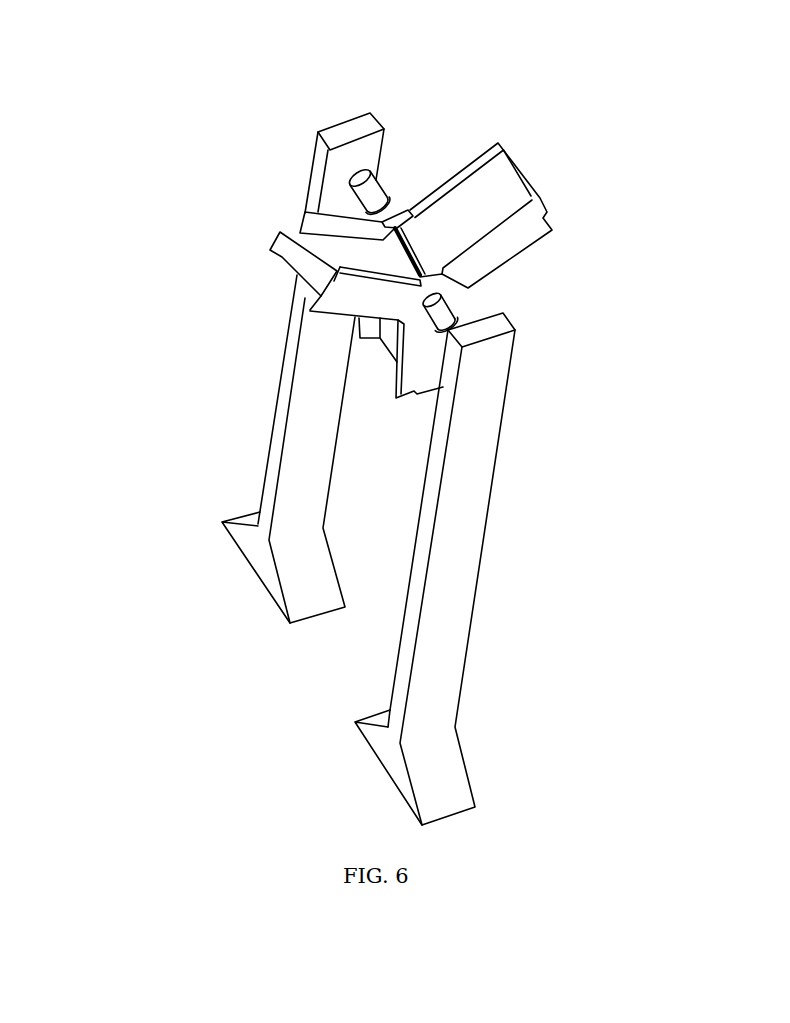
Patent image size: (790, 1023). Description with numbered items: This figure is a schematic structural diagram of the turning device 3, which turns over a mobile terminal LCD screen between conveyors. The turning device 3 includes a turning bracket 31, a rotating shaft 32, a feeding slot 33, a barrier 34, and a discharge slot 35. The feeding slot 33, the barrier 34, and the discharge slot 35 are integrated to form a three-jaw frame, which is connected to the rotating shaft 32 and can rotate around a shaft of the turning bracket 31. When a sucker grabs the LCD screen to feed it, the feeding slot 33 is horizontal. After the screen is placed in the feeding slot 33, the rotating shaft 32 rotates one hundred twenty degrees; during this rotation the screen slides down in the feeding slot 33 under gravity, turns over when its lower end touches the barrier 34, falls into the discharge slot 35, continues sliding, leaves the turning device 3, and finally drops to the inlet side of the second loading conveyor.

The turning device 3 is at (353, 469).
The turning bracket 31 is at (478, 378).
The rotating shaft 32 is at (442, 313).
The feeding slot 33 is at (488, 209).
The barrier 34 is at (406, 213).
The discharge slot 35 is at (337, 250).